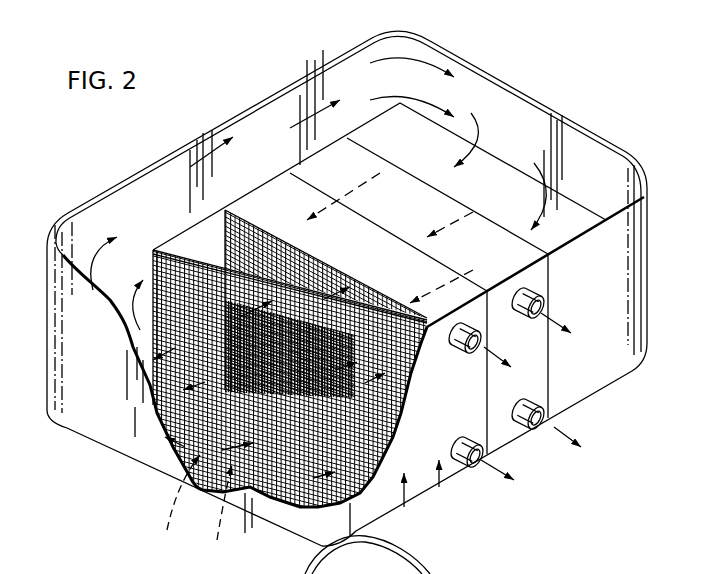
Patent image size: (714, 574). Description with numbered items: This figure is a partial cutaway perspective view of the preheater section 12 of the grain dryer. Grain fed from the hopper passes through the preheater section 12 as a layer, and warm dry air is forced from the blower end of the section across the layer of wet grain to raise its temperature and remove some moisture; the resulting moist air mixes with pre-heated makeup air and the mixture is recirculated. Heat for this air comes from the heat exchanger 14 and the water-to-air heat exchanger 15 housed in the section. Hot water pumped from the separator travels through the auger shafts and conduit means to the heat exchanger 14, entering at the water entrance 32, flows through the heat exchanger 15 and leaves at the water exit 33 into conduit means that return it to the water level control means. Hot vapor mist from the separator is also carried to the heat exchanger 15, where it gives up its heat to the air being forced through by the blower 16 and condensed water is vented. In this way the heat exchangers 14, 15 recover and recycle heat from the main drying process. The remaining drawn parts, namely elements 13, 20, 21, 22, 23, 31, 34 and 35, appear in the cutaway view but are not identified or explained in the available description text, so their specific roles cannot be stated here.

The preheater section 12 is at (574, 80).
The air inlet flow 13 is at (406, 505).
The heat exchanger 14 is at (446, 488).
The heat exchanger 15 is at (526, 385).
The blower 16 is at (571, 398).
The housing top rim 20 is at (343, 72).
The front filter screen 21 is at (153, 266).
The rear filter screen 22 is at (270, 247).
The filter chamber 23 is at (213, 258).
The broken-away wall portion 31 is at (165, 480).
The water entrance 32 is at (472, 468).
The water exit 33 is at (470, 337).
The outlet nozzle 34 is at (545, 318).
The outlet nozzle 35 is at (541, 427).